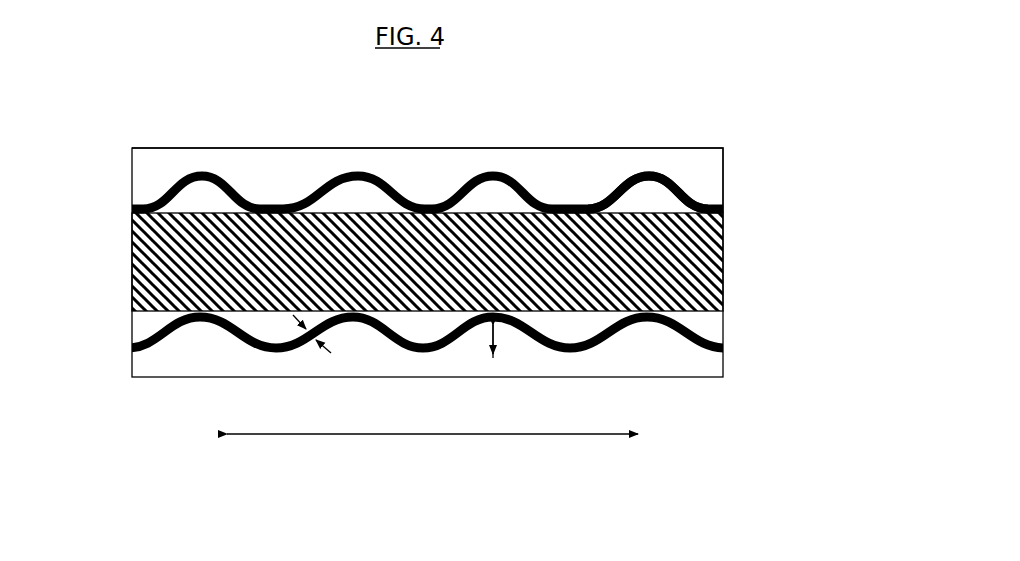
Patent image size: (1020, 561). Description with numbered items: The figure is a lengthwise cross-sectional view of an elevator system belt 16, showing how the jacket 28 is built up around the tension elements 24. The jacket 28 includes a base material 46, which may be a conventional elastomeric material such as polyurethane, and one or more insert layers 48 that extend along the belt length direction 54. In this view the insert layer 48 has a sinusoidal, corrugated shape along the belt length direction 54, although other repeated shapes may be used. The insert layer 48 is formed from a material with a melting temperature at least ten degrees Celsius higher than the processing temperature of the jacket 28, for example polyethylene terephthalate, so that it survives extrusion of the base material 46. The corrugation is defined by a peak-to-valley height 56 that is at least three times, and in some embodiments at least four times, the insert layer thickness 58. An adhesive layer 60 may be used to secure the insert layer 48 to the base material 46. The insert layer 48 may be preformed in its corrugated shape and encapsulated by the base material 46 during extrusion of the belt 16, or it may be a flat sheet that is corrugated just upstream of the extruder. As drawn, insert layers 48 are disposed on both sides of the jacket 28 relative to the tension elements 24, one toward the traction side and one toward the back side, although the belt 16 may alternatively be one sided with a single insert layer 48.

The belt 16 is at (108, 107).
The tension elements 24 is at (148, 292).
The jacket 28 is at (697, 162).
The base material 46 is at (282, 173).
The insert layer 48 is at (603, 188).
The belt length direction 54 is at (420, 434).
The peak-to-valley height 56 is at (492, 336).
The insert layer thickness 58 is at (330, 352).
The adhesive layer 60 is at (695, 195).